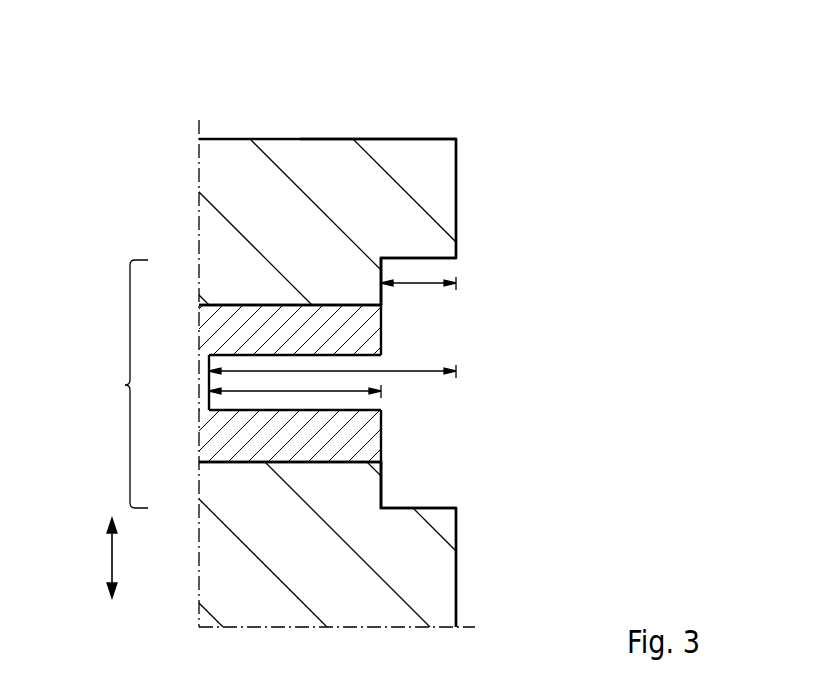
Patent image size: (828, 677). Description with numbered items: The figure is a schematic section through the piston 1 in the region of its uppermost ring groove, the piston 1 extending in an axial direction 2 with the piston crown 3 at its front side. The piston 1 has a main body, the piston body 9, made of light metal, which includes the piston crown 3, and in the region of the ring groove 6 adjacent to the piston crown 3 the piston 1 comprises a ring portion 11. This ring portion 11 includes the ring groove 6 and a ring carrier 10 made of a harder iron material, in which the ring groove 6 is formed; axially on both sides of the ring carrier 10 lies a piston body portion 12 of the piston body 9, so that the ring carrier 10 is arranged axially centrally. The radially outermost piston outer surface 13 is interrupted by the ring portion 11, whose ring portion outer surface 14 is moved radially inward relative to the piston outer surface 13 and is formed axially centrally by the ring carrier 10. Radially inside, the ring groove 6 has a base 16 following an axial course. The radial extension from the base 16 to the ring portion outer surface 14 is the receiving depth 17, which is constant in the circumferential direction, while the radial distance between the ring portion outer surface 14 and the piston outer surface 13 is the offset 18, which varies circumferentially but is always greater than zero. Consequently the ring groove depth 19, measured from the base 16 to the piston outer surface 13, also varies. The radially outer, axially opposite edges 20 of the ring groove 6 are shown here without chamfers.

The piston 1 is at (634, 188).
The axial direction 2 is at (112, 557).
The piston crown 3 is at (327, 139).
The ring groove 6 is at (260, 400).
The piston body 9 is at (383, 139).
The ring carrier 10 is at (272, 304).
The ring portion 11 is at (125, 385).
The piston body portion 12 is at (382, 272).
The piston outer surface 13 is at (492, 201).
The ring portion outer surface 14 is at (416, 331).
The base 16 is at (208, 385).
The receiving depth 17 is at (338, 390).
The offset 18 is at (421, 285).
The ring groove depth 19 is at (327, 362).
The edges 20 is at (382, 356).